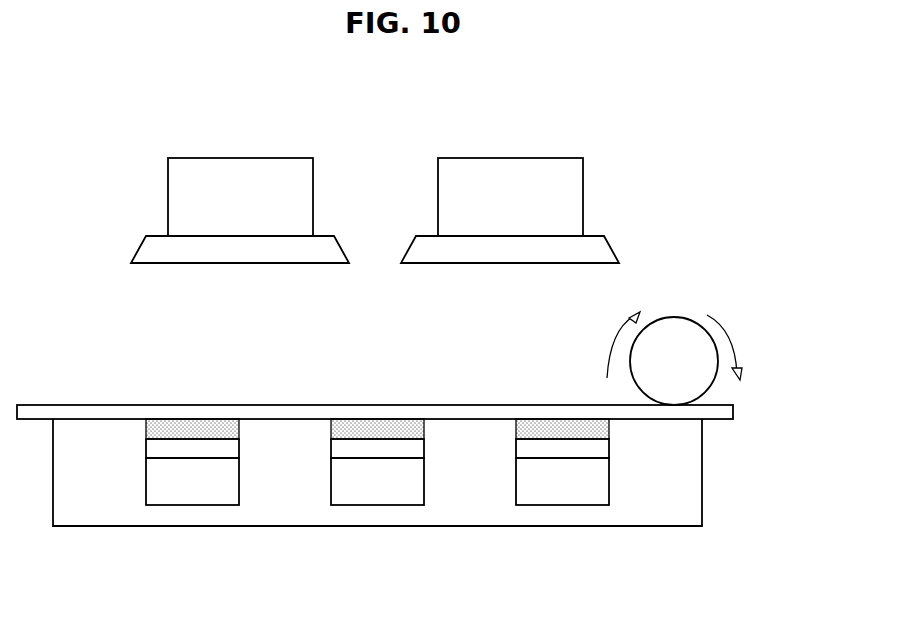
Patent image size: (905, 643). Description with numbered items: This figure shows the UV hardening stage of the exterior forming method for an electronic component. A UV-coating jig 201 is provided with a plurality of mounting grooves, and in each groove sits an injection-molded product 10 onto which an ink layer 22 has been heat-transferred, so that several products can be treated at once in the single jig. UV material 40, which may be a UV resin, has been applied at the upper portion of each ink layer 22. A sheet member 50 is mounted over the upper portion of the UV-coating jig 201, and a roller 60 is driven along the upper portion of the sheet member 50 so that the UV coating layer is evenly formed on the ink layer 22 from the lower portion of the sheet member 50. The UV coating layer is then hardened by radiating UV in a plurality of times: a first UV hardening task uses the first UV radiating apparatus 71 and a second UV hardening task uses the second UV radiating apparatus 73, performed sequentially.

The first UV radiating apparatus 71 is at (240, 160).
The second UV radiating apparatus 73 is at (511, 160).
The roller 60 is at (674, 316).
The sheet member 50 is at (726, 413).
The UV-coating jig 201 is at (695, 472).
The UV material 40 is at (157, 432).
The ink layer 22 is at (195, 448).
The injection-molded product 10 is at (227, 480).